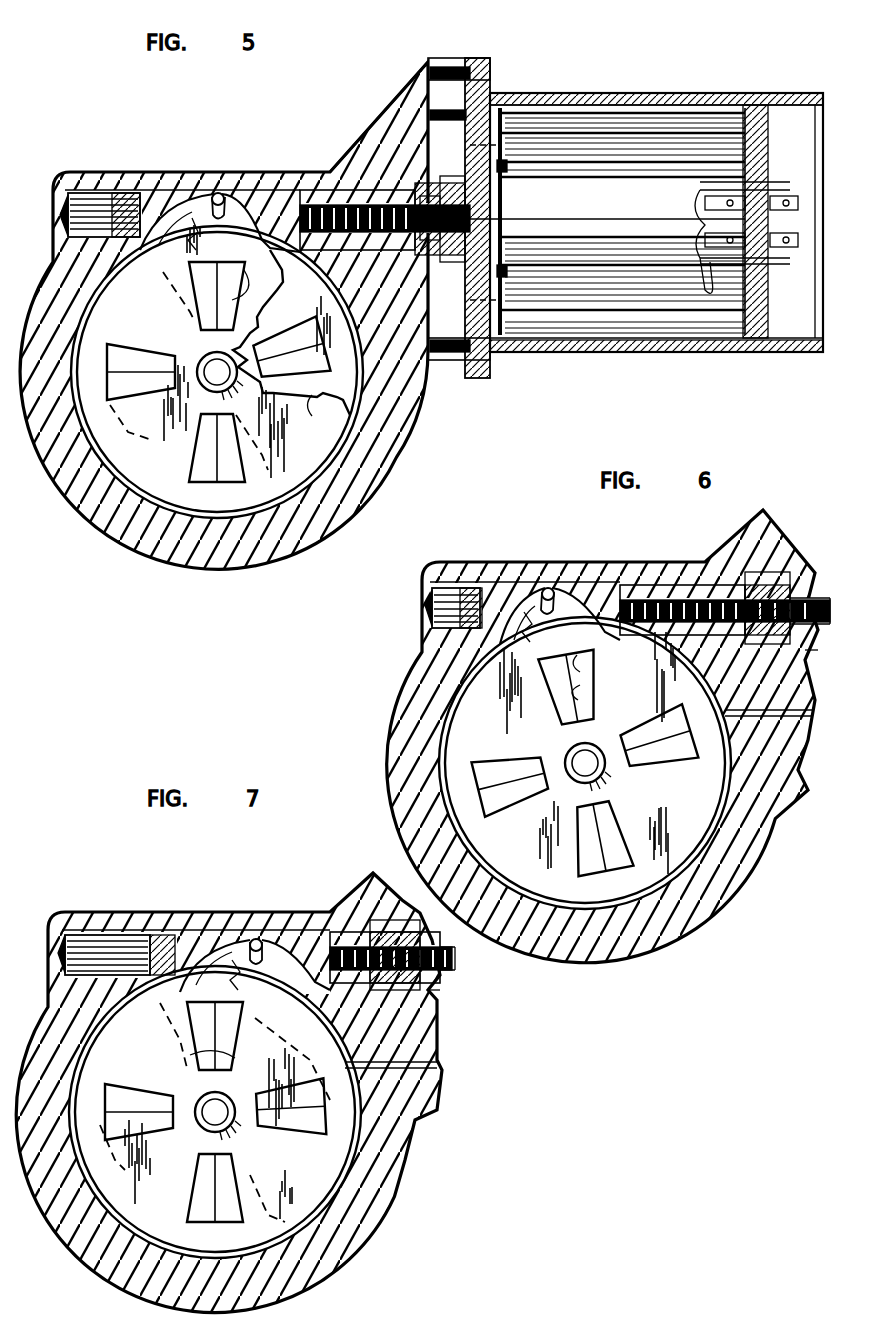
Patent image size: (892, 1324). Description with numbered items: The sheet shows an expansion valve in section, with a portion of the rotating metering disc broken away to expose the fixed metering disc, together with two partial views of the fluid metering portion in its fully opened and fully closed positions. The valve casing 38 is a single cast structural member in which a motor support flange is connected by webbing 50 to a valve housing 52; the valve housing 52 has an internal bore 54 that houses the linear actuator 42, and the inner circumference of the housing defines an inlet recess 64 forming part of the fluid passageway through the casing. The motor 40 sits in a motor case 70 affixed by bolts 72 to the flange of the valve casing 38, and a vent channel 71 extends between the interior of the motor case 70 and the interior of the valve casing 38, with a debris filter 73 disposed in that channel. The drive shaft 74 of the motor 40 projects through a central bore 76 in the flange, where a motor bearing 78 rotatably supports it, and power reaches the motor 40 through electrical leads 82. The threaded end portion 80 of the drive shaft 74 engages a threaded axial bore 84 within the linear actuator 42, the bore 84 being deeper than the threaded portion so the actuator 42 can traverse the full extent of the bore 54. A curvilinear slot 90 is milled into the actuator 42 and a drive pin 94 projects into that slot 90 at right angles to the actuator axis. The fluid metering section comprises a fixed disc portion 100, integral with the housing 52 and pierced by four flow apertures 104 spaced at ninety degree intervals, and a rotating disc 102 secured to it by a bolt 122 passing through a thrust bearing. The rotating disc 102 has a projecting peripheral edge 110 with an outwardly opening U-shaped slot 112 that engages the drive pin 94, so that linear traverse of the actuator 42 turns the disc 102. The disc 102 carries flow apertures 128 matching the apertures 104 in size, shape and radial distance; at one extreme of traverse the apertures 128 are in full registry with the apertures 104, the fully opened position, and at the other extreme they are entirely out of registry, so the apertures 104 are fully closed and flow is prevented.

In FIG. 6, the valve casing 38 is at (762, 752).
In FIG. 7, the valve casing 38 is at (402, 1098).
In FIG. 5, the motor 40 is at (625, 222).
In FIG. 5, the linear actuator 42 is at (130, 186).
In FIG. 6, the linear actuator 42 is at (465, 582).
In FIG. 7, the linear actuator 42 is at (165, 930).
In FIG. 5, the webbing 50 is at (392, 142).
In FIG. 5, the valve housing 52 is at (150, 545).
In FIG. 6, the valve housing 52 is at (683, 925).
In FIG. 7, the valve housing 52 is at (300, 1272).
In FIG. 5, the internal bore 54 is at (70, 215).
In FIG. 6, the internal bore 54 is at (428, 602).
In FIG. 7, the internal bore 54 is at (95, 932).
In FIG. 5, the inlet recess 64 is at (108, 470).
In FIG. 6, the inlet recess 64 is at (445, 722).
In FIG. 7, the inlet recess 64 is at (110, 1252).
In FIG. 5, the motor case 70 is at (732, 352).
In FIG. 5, the vent channel 71 is at (415, 378).
In FIG. 6, the vent channel 71 is at (812, 710).
In FIG. 7, the vent channel 71 is at (437, 1062).
In FIG. 5, the bolts 72 is at (485, 72).
In FIG. 5, the debris filter 73 is at (520, 352).
In FIG. 5, the drive shaft 74 is at (480, 221).
In FIG. 6, the drive shaft 74 is at (825, 612).
In FIG. 7, the drive shaft 74 is at (452, 975).
In FIG. 5, the central bore 76 is at (445, 212).
In FIG. 5, the motor bearing 78 is at (425, 225).
In FIG. 5, the end portion 80 is at (375, 195).
In FIG. 6, the end portion 80 is at (790, 590).
In FIG. 7, the end portion 80 is at (452, 962).
In FIG. 5, the electrical leads 82 is at (800, 203).
In FIG. 5, the threaded axial bore 84 is at (292, 188).
In FIG. 6, the threaded axial bore 84 is at (652, 584).
In FIG. 7, the threaded axial bore 84 is at (332, 930).
In FIG. 5, the curvilinear slot 90 is at (165, 250).
In FIG. 6, the curvilinear slot 90 is at (465, 640).
In FIG. 7, the curvilinear slot 90 is at (200, 950).
In FIG. 5, the drive pin 94 is at (233, 195).
In FIG. 6, the drive pin 94 is at (552, 588).
In FIG. 7, the drive pin 94 is at (258, 938).
In FIG. 5, the fixed disc portion 100 is at (232, 268).
In FIG. 6, the fixed disc portion 100 is at (604, 912).
In FIG. 7, the fixed disc portion 100 is at (252, 1030).
In FIG. 5, the rotating disc 102 is at (219, 348).
In FIG. 6, the rotating disc 102 is at (690, 819).
In FIG. 7, the rotating disc 102 is at (300, 1176).
In FIG. 5, the flow apertures 104 is at (184, 316).
In FIG. 6, the flow apertures 104 is at (582, 660).
In FIG. 7, the flow apertures 104 is at (165, 1030).
In FIG. 5, the peripheral edge 110 is at (190, 210).
In FIG. 6, the peripheral edge 110 is at (528, 588).
In FIG. 7, the peripheral edge 110 is at (232, 952).
In FIG. 5, the U-shaped slot 112 is at (215, 192).
In FIG. 6, the U-shaped slot 112 is at (552, 588).
In FIG. 7, the U-shaped slot 112 is at (252, 940).
In FIG. 5, the bolt 122 is at (228, 384).
In FIG. 6, the bolt 122 is at (577, 775).
In FIG. 7, the bolt 122 is at (218, 1116).
In FIG. 5, the flow apertures 128 is at (280, 288).
In FIG. 6, the flow apertures 128 is at (585, 692).
In FIG. 7, the flow apertures 128 is at (185, 1046).